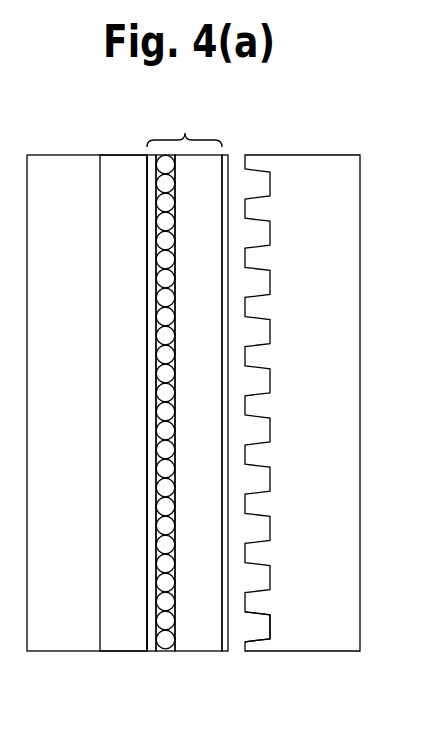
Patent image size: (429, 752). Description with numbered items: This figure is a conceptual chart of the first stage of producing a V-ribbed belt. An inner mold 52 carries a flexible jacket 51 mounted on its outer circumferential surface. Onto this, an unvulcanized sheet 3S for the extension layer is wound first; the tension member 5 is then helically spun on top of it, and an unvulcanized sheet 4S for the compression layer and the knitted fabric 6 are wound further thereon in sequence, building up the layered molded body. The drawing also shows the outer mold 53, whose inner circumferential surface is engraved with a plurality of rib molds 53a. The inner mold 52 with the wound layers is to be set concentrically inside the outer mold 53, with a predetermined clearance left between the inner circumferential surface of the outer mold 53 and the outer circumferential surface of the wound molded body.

The inner mold 52 is at (147, 147).
The flexible jacket 51 is at (118, 651).
The unvulcanized sheet for the extension layer 3S is at (152, 651).
The tension member 5 is at (167, 651).
The unvulcanized sheet for the compression layer 4S is at (200, 651).
The knitted fabric 6 is at (227, 651).
The outer mold 53 is at (360, 147).
The rib mold 53a is at (257, 603).